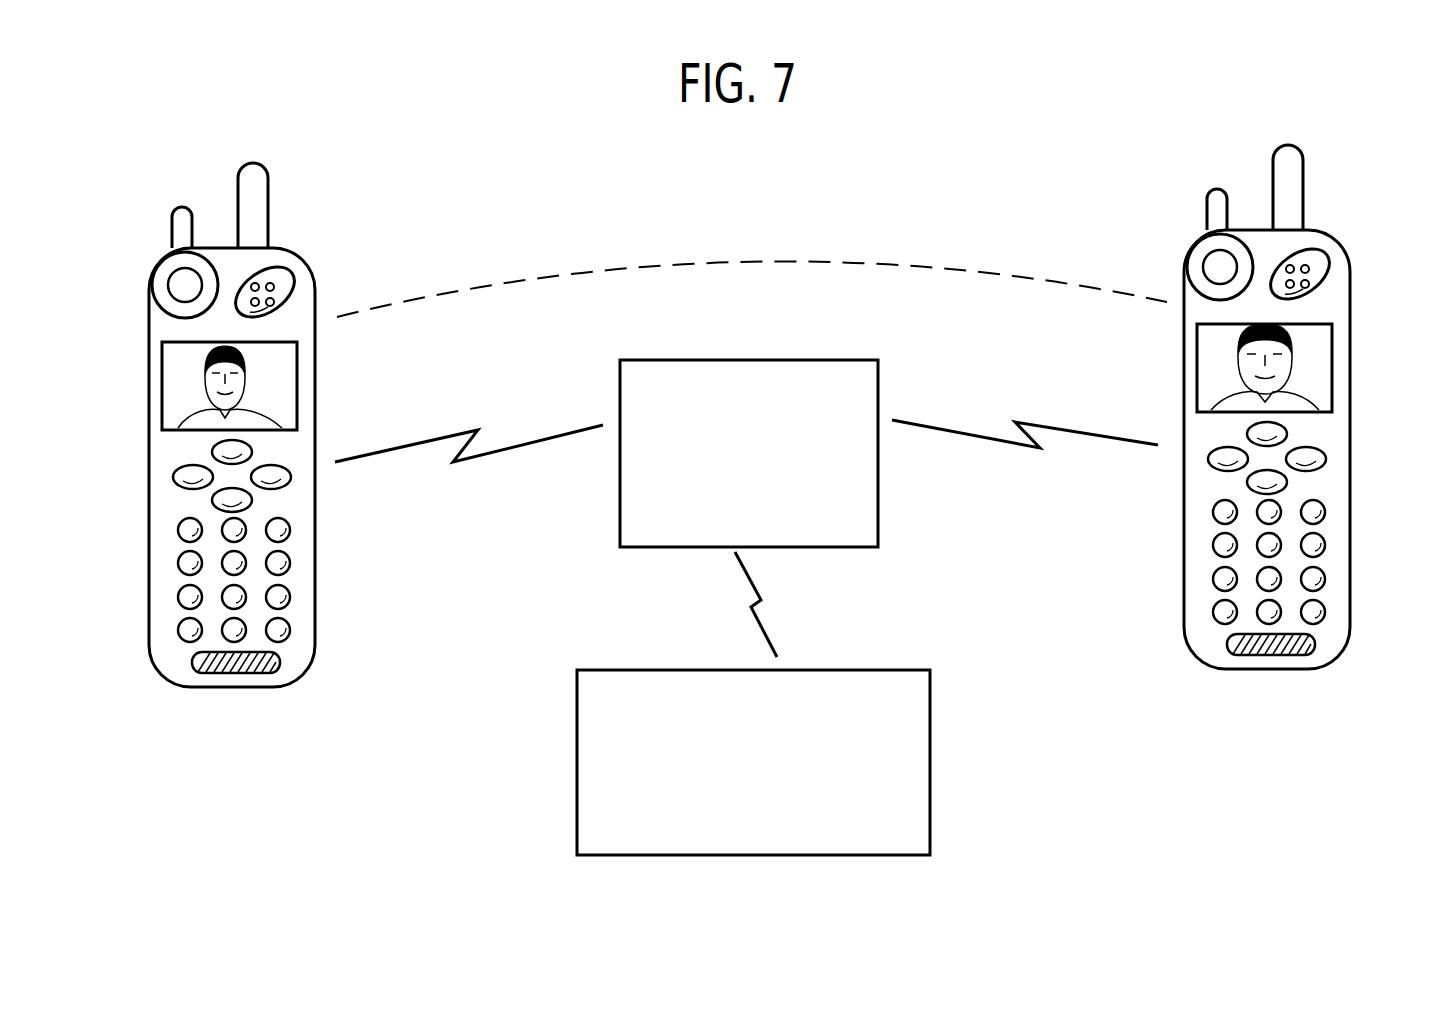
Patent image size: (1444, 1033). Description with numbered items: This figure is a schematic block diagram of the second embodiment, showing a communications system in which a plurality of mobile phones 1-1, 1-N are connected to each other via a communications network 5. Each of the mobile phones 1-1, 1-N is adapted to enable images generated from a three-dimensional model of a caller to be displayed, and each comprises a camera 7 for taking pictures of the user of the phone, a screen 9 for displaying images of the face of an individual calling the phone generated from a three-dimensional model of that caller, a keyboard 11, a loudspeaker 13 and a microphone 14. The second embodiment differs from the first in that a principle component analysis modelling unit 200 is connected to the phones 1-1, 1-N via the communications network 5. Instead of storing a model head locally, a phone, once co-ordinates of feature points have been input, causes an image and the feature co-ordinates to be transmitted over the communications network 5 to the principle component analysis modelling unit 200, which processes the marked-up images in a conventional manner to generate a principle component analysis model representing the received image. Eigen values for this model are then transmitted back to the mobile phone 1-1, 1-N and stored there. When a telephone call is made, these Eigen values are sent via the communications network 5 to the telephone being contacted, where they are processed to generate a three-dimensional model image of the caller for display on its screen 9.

The mobile phone 1-1 is at (149, 347).
The mobile phone 1-N is at (1349, 364).
The communications network 5 is at (815, 358).
The camera 7 is at (172, 268).
The screen 9 is at (285, 392).
The keyboard 11 is at (180, 548).
The loudspeaker 13 is at (283, 277).
The microphone 14 is at (228, 674).
The principle component analysis modelling unit 200 is at (882, 668).